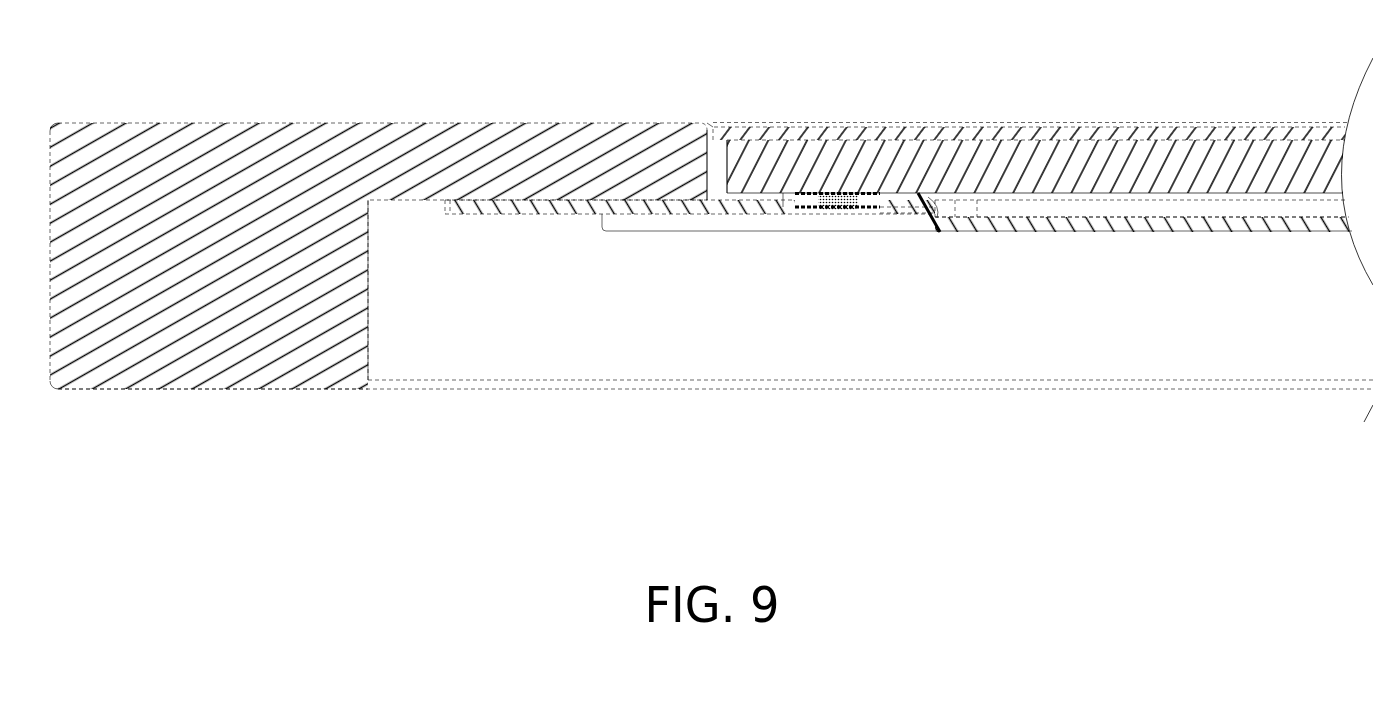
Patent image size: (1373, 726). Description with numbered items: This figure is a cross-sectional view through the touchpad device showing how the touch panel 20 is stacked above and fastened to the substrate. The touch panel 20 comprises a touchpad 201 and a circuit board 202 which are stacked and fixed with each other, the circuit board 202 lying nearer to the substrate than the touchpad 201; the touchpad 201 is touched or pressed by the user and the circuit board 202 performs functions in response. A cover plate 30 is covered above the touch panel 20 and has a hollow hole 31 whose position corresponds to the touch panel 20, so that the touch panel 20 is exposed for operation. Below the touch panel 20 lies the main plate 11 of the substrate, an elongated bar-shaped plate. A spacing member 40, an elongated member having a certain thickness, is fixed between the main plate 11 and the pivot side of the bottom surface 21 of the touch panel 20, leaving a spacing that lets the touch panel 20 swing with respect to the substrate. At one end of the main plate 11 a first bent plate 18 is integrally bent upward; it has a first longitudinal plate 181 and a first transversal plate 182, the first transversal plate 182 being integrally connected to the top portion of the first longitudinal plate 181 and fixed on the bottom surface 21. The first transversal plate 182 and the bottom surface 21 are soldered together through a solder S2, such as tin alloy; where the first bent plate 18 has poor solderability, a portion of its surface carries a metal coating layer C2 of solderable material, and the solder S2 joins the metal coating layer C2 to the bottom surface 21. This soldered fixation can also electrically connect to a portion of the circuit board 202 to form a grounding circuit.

The main plate 11 is at (1120, 233).
The first bent plate 18 is at (851, 203).
The first longitudinal plate 181 is at (909, 247).
The first transversal plate 182 is at (821, 187).
The touch panel 20 is at (1036, 103).
The touchpad 201 is at (1020, 140).
The circuit board 202 is at (988, 58).
The bottom surface 21 is at (1020, 203).
The cover plate 30 is at (466, 122).
The hollow hole 31 is at (707, 123).
The spacing member 40 is at (1238, 207).
The metal coating layer C2 is at (812, 193).
The solder S2 is at (827, 213).